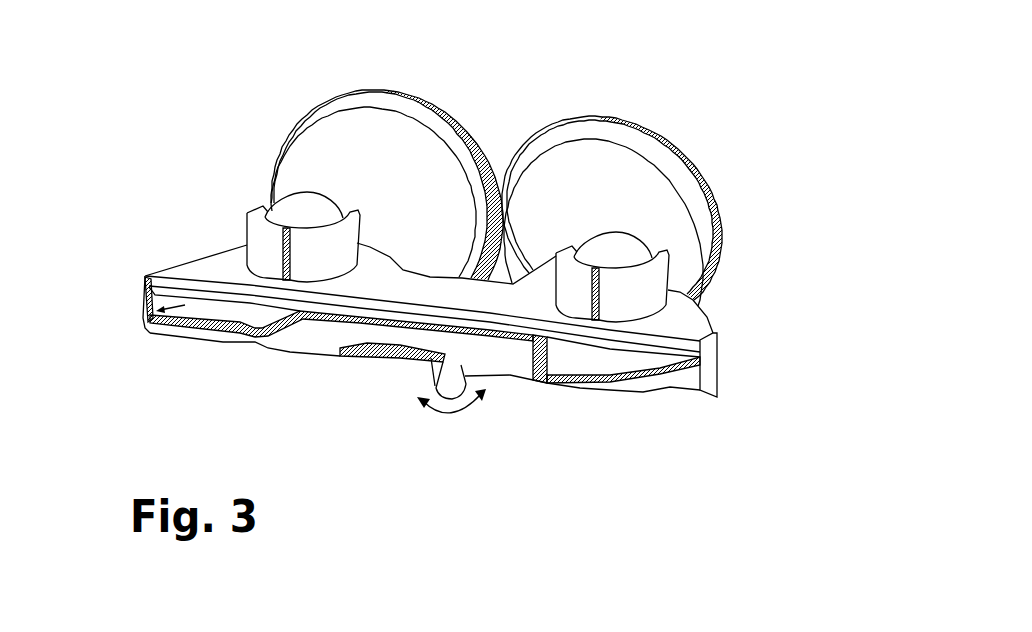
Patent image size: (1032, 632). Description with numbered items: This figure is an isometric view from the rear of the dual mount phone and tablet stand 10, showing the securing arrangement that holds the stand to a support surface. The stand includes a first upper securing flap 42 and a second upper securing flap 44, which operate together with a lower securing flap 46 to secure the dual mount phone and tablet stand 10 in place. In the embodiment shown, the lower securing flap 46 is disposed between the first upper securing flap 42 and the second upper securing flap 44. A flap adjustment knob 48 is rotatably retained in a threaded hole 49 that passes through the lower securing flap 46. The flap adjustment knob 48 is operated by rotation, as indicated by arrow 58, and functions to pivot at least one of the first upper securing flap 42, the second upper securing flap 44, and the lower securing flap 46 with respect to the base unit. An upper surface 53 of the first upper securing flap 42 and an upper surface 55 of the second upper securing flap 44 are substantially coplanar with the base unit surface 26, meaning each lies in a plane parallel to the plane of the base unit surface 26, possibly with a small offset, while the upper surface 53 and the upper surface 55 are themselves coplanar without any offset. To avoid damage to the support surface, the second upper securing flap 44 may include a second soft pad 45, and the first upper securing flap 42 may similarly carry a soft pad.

The dual mount phone and tablet stand 10 is at (636, 37).
The base unit surface 26 is at (218, 262).
The first upper securing flap 42 is at (182, 338).
The second upper securing flap 44 is at (603, 375).
The second soft pad 45 is at (600, 368).
The lower securing flap 46 is at (308, 342).
The flap adjustment knob 48 is at (428, 373).
The threaded hole 49 is at (147, 313).
The upper surface 53 is at (140, 297).
The upper surface 55 is at (700, 358).
The arrow 58 is at (469, 418).